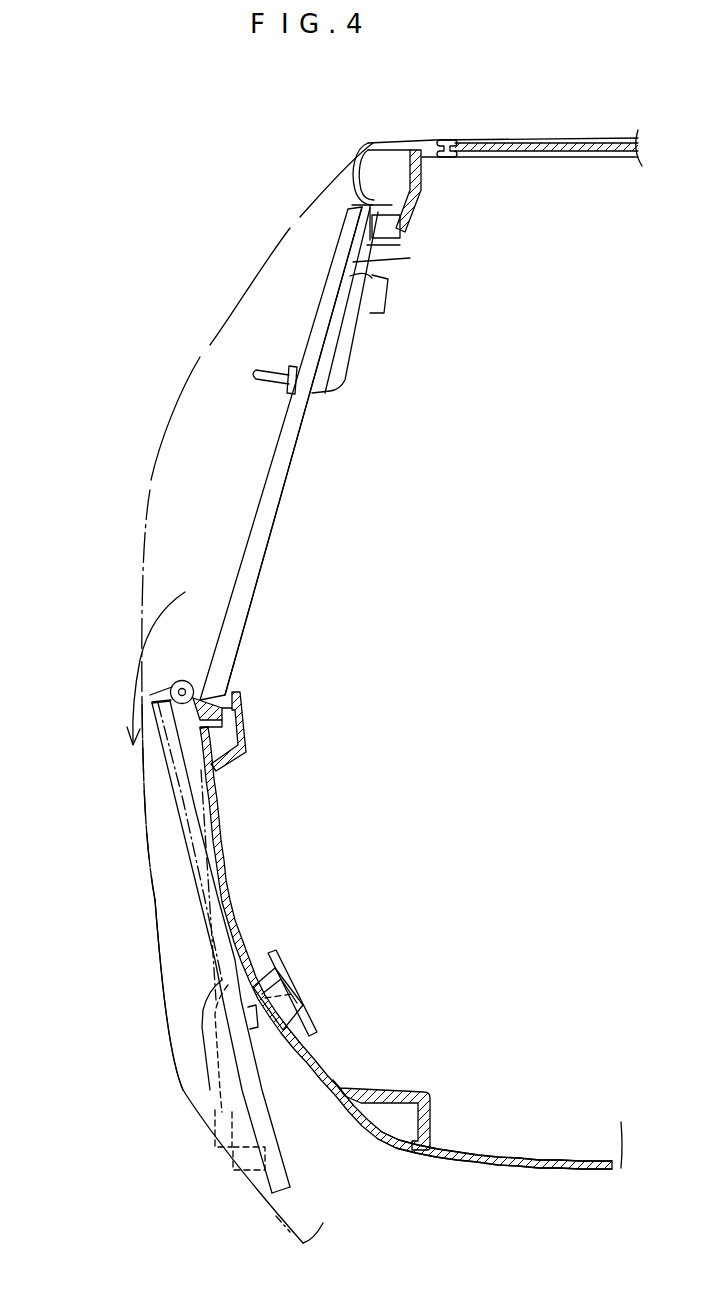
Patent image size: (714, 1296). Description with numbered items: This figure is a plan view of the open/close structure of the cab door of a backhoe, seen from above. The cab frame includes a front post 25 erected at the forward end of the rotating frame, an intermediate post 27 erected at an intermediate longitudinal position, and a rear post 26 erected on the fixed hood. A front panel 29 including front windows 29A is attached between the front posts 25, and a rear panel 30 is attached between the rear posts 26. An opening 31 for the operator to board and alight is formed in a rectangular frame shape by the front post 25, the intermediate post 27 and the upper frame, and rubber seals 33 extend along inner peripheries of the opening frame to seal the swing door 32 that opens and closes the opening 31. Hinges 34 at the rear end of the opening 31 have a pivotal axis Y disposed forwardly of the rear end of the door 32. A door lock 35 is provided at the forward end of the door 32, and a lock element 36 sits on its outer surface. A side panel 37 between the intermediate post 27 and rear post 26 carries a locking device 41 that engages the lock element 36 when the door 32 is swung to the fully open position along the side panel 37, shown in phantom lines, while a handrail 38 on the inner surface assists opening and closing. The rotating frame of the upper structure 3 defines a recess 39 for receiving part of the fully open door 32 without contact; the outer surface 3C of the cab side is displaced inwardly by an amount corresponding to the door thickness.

The upper structure 3 is at (136, 535).
The door outer panel line 3C is at (147, 813).
The recess 39 is at (185, 957).
The front post 25 is at (420, 190).
The rear post 26 is at (425, 1092).
The intermediate post 27 is at (247, 743).
The front panel 29 is at (537, 137).
The front window 29A is at (585, 140).
The rear panel 30 is at (525, 1155).
The opening 31 is at (272, 552).
The swing door 32 is at (283, 490).
The rubber seal 33 is at (362, 165).
The hinge 34 is at (192, 688).
The door lock 35 is at (390, 260).
The lock element 36 is at (264, 372).
The side panel 37 is at (228, 884).
The handrail 38 is at (355, 358).
The locking device 41 is at (285, 988).